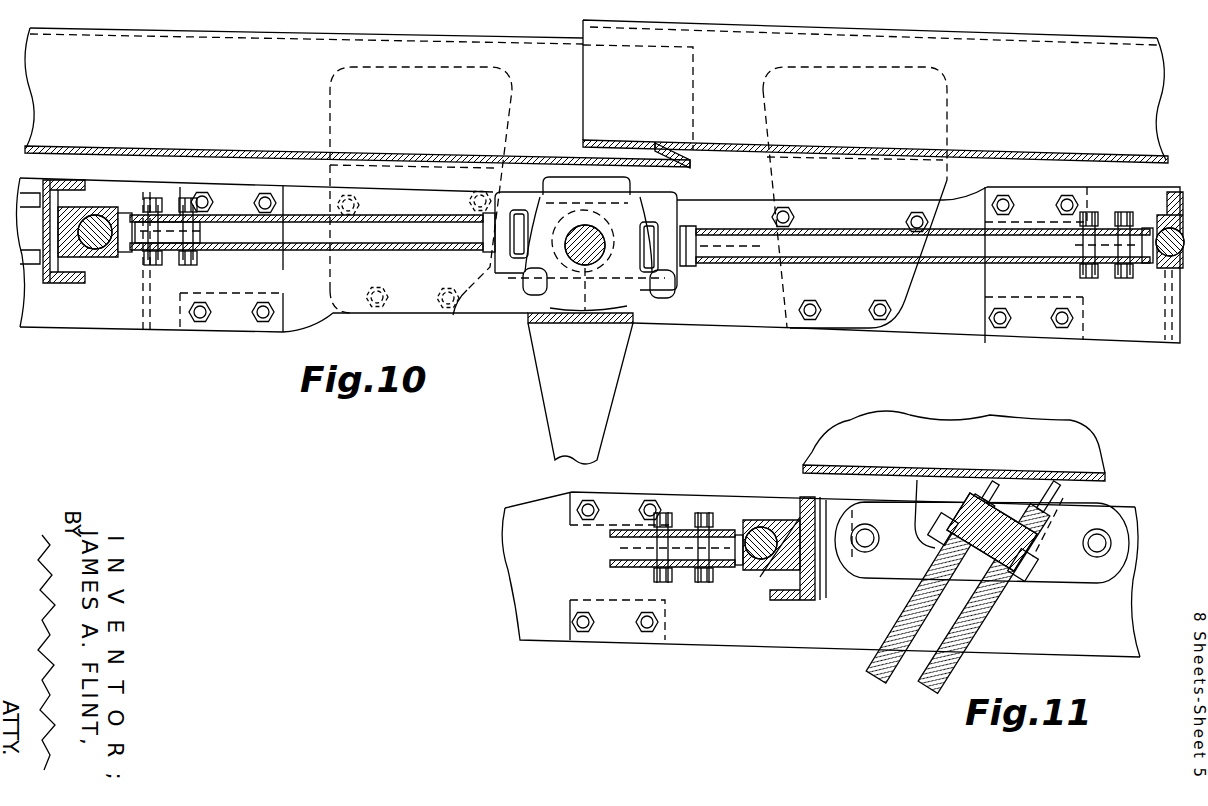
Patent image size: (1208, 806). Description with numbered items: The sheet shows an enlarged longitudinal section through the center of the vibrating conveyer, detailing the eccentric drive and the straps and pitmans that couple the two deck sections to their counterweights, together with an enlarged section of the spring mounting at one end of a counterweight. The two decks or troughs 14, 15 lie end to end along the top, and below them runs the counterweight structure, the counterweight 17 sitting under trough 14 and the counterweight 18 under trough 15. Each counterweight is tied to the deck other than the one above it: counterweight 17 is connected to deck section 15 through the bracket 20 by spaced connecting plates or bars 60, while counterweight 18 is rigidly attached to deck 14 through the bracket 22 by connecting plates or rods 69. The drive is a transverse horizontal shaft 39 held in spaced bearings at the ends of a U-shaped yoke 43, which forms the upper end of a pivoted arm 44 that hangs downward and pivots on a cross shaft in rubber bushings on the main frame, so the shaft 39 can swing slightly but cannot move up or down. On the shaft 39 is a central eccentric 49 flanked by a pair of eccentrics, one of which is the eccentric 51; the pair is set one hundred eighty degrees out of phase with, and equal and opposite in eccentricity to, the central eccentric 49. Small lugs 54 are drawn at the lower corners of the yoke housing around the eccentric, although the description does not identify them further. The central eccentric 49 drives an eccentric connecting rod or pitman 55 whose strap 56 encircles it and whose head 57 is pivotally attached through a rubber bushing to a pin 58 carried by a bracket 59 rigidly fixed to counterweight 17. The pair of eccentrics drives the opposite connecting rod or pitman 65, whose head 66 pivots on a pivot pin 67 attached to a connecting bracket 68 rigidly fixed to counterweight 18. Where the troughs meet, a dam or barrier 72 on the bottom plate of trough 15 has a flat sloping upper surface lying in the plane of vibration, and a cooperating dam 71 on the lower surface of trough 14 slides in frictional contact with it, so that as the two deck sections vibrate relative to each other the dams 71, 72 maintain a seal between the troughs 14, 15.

In FIG. 10, the deck or trough 14 is at (875, 91).
In FIG. 11, the deck or trough 14 is at (954, 446).
In FIG. 10, the deck or trough 15 is at (402, 52).
In FIG. 10, the counterweight 17 is at (1100, 328).
In FIG. 11, the counterweight 17 is at (821, 568).
In FIG. 10, the counterweight 18 is at (118, 322).
In FIG. 10, the bracket 20 is at (945, 184).
In FIG. 10, the bracket 22 is at (328, 172).
In FIG. 10, the shaft 39 is at (598, 236).
In FIG. 10, the U-shaped yoke 43 is at (592, 325).
In FIG. 10, the pivoted arm 44 is at (532, 408).
In FIG. 10, the central eccentric 49 is at (597, 268).
In FIG. 10, the eccentric 51 is at (562, 213).
In FIG. 10, the lug 54 is at (527, 281).
In FIG. 10, the eccentric connecting rod or pitman 55 is at (747, 270).
In FIG. 11, the eccentric connecting rod or pitman 55 is at (633, 566).
In FIG. 10, the strap 56 is at (579, 182).
In FIG. 10, the head 57 is at (1160, 266).
In FIG. 11, the head 57 is at (742, 522).
In FIG. 10, the pin 58 is at (1165, 226).
In FIG. 11, the pin 58 is at (753, 568).
In FIG. 11, the bracket 59 is at (803, 584).
In FIG. 10, the connecting plates or bars 60 is at (947, 322).
In FIG. 10, the connecting rod or pitman 65 is at (313, 251).
In FIG. 10, the head 66 is at (105, 252).
In FIG. 10, the pivot pin 67 is at (104, 217).
In FIG. 10, the connecting bracket 68 is at (63, 265).
In FIG. 10, the connecting plates or rods 69 is at (693, 326).
In FIG. 10, the dam 71 is at (677, 145).
In FIG. 10, the dam or barrier 72 is at (688, 148).